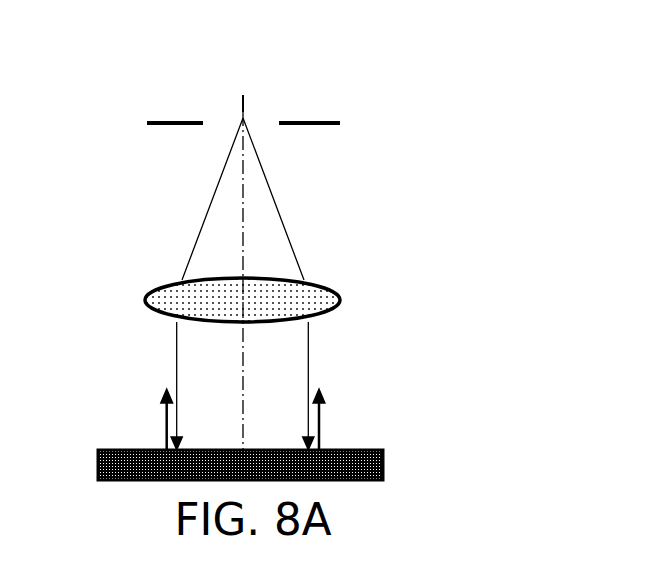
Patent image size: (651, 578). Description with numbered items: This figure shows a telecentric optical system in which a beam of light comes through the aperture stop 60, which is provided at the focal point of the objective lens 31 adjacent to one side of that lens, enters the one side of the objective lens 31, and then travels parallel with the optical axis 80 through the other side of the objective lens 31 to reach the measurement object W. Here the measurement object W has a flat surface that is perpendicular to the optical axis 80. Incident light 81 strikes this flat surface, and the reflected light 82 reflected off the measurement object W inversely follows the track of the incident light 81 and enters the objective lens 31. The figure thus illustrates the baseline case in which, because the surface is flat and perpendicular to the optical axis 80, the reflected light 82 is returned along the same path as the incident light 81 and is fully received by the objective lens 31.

The optical axis 80 is at (246, 106).
The aperture stop 60 is at (312, 121).
The objective lens 31 is at (334, 278).
The incident light 81 is at (176, 347).
The reflected light 82 is at (158, 418).
The measurement object W is at (385, 463).